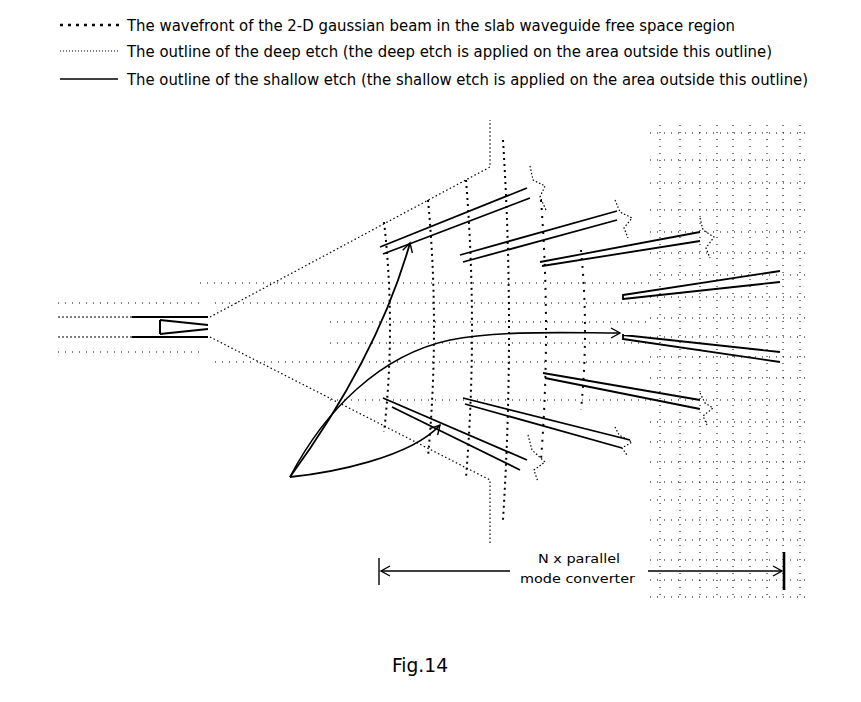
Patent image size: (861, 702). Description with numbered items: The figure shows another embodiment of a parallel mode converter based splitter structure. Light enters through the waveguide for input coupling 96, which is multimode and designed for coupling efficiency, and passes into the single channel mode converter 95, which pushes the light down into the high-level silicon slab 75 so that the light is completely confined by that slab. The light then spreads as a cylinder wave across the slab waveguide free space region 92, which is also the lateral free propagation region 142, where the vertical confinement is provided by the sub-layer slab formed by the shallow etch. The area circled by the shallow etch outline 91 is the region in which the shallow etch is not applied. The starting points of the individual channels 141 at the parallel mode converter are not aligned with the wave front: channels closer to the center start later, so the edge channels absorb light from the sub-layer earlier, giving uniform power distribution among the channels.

The waveguide for input coupling 96 is at (95, 325).
The single channel mode converter 95 is at (165, 331).
The area circled by the shallow etch outline 91 is at (440, 226).
The high-level silicon slab 75 is at (371, 332).
The slab waveguide free space region 92 is at (371, 332).
The lateral free propagation region 142 is at (356, 278).
The starting points of the individual channels 141 is at (348, 373).